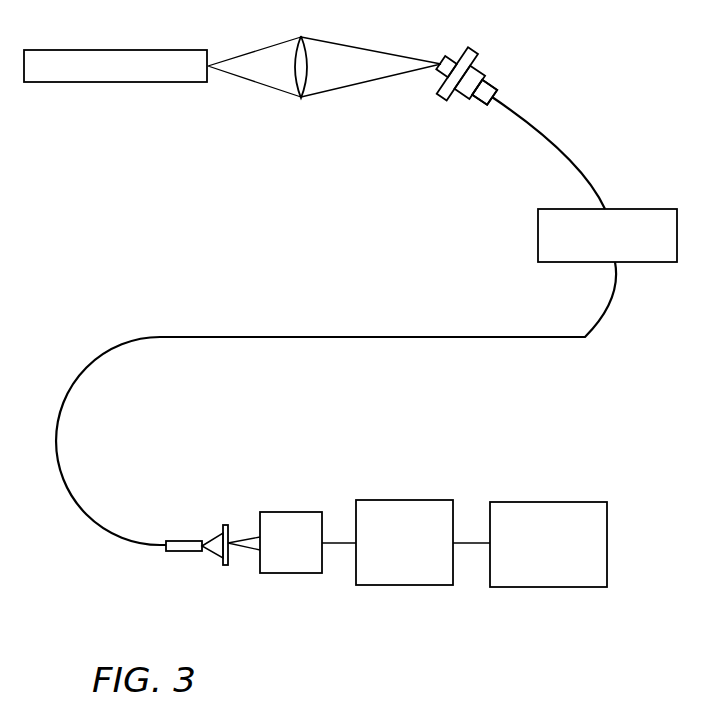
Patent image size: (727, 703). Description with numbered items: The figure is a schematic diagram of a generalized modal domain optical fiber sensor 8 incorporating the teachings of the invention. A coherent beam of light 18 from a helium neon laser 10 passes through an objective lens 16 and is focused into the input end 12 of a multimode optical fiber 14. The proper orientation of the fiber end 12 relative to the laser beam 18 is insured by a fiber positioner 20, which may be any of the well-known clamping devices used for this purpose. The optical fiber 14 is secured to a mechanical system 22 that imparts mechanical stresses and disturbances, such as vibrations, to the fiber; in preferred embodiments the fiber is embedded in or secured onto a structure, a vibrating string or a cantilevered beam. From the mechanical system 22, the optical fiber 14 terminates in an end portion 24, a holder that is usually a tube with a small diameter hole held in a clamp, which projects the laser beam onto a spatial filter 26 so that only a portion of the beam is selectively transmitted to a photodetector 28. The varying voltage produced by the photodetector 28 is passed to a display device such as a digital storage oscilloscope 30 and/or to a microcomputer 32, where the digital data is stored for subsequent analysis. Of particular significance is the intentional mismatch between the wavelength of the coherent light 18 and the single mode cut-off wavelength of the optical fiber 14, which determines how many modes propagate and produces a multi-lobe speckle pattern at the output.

The modal domain sensor 8 is at (336, 205).
The laser 10 is at (145, 50).
The fiber end 12 is at (448, 36).
The multimode optical fiber 14 is at (588, 172).
The objective lens 16 is at (304, 37).
The laser beam 18 is at (378, 63).
The fiber positioner 20 is at (468, 92).
The mechanical system 22 is at (651, 209).
The end portion 24 is at (175, 552).
The spatial filter 26 is at (224, 565).
The photodetector 28 is at (297, 557).
The digital storage oscilloscope 30 is at (410, 578).
The microcomputer 32 is at (596, 587).